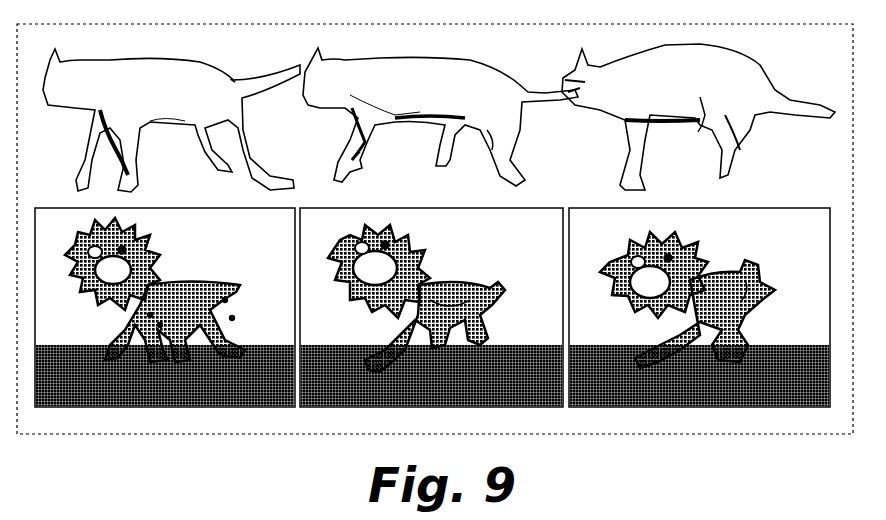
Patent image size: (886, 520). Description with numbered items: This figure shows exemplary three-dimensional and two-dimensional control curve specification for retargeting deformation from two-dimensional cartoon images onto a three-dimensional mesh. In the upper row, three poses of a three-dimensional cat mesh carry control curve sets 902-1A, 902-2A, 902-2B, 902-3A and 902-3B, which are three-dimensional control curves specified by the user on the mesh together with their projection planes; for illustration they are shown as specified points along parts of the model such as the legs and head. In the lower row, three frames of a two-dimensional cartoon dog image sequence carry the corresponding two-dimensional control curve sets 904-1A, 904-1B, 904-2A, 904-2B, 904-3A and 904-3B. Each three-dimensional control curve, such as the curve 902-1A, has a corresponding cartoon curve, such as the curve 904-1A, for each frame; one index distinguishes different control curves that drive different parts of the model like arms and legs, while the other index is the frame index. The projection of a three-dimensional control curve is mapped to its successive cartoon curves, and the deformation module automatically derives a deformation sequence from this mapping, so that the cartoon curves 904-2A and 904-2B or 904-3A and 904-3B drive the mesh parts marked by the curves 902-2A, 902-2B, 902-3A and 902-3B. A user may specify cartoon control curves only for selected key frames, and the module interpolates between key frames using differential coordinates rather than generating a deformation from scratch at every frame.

The control curve set 902-1A is at (128, 168).
The control curve set 902-2A is at (364, 155).
The control curve set 902-2B is at (490, 132).
The control curve set 902-3A is at (578, 82).
The control curve set 902-3B is at (725, 115).
The control curve set 904-1A is at (157, 328).
The control curve set 904-1B is at (232, 328).
The control curve set 904-2A is at (395, 320).
The control curve set 904-2B is at (492, 303).
The control curve set 904-3A is at (675, 240).
The control curve set 904-3B is at (725, 292).